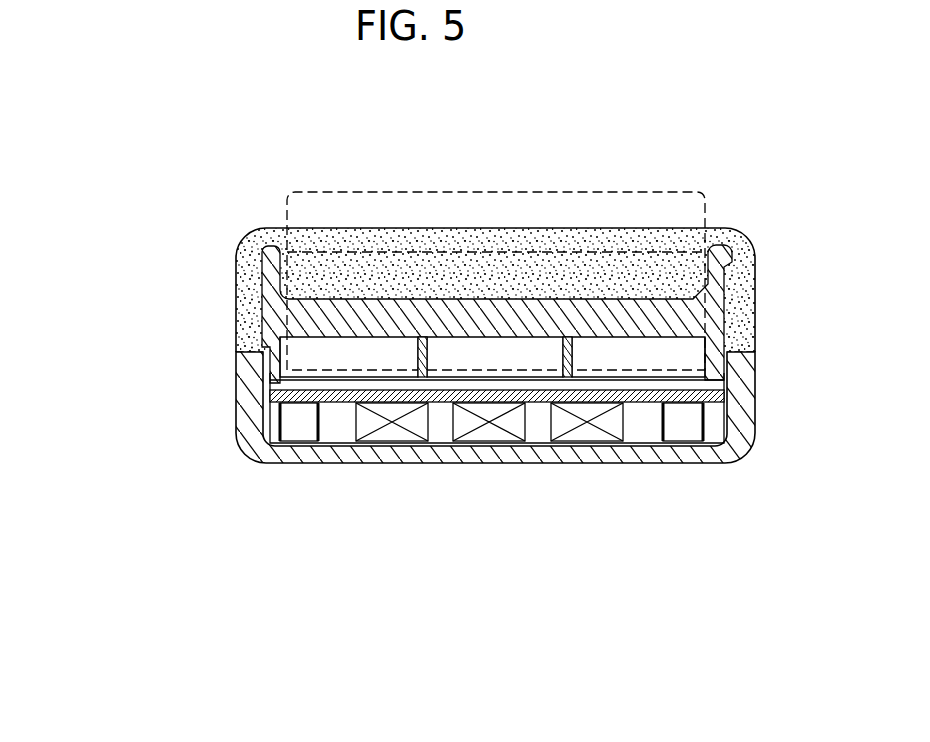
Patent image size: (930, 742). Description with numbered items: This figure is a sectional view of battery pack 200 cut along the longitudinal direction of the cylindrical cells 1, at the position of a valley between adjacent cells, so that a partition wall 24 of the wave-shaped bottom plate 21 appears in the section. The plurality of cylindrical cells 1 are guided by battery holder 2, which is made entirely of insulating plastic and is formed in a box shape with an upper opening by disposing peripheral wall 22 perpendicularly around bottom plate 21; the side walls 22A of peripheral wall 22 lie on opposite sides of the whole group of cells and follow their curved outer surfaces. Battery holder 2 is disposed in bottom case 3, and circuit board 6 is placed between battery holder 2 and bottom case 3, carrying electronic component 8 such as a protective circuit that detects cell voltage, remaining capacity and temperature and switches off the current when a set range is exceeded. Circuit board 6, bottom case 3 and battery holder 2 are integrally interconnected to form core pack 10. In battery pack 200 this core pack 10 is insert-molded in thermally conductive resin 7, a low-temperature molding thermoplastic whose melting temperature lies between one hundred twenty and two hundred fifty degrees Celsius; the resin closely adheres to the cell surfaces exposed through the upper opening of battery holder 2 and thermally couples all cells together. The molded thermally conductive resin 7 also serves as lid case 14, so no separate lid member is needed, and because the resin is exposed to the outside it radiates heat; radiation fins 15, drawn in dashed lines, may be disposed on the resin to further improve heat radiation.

The battery pack 200 is at (253, 125).
The radiation fins 15 is at (360, 192).
The lid case 14 is at (497, 215).
The thermally conductive resin 7 is at (497, 215).
The side walls 22A is at (688, 250).
The peripheral wall 22 is at (433, 209).
The bottom plate 21 is at (487, 355).
The partition walls 24 is at (593, 303).
The cylindrical cell 1 is at (338, 370).
The circuit board 6 is at (682, 610).
The bottom case 3 is at (538, 450).
The electronic component 8 is at (582, 430).
The battery holder 2 is at (642, 385).
The core pack 10 is at (495, 522).